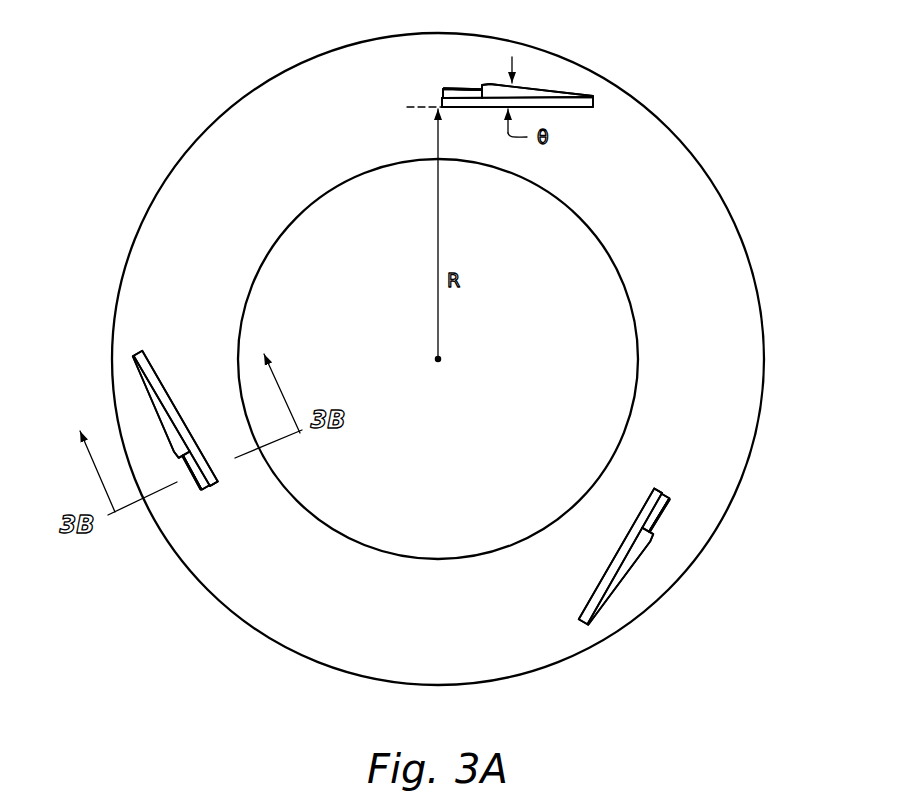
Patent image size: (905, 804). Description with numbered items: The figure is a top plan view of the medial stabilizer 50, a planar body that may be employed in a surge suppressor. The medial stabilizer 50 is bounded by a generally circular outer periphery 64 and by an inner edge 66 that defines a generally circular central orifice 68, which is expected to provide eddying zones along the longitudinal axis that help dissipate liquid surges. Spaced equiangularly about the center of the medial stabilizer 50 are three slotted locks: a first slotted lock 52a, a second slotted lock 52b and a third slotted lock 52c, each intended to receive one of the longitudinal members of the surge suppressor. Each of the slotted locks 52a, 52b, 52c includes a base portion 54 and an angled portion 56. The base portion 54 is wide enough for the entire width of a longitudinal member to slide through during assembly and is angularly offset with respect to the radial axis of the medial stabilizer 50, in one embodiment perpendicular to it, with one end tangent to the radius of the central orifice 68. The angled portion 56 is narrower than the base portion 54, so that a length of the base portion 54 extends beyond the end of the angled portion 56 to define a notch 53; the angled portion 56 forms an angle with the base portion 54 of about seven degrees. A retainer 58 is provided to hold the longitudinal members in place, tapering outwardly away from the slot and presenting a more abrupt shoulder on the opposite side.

The medial stabilizer 50 is at (686, 76).
The first slotted lock 52a is at (553, 95).
The second slotted lock 52b is at (617, 573).
The third slotted lock 52c is at (145, 380).
The notch 53 is at (458, 109).
The base portion 54 is at (561, 108).
The angled portion 56 is at (490, 84).
The retainer 58 is at (446, 94).
The outer periphery 64 is at (733, 218).
The inner edge 66 is at (638, 352).
The central orifice 68 is at (318, 245).